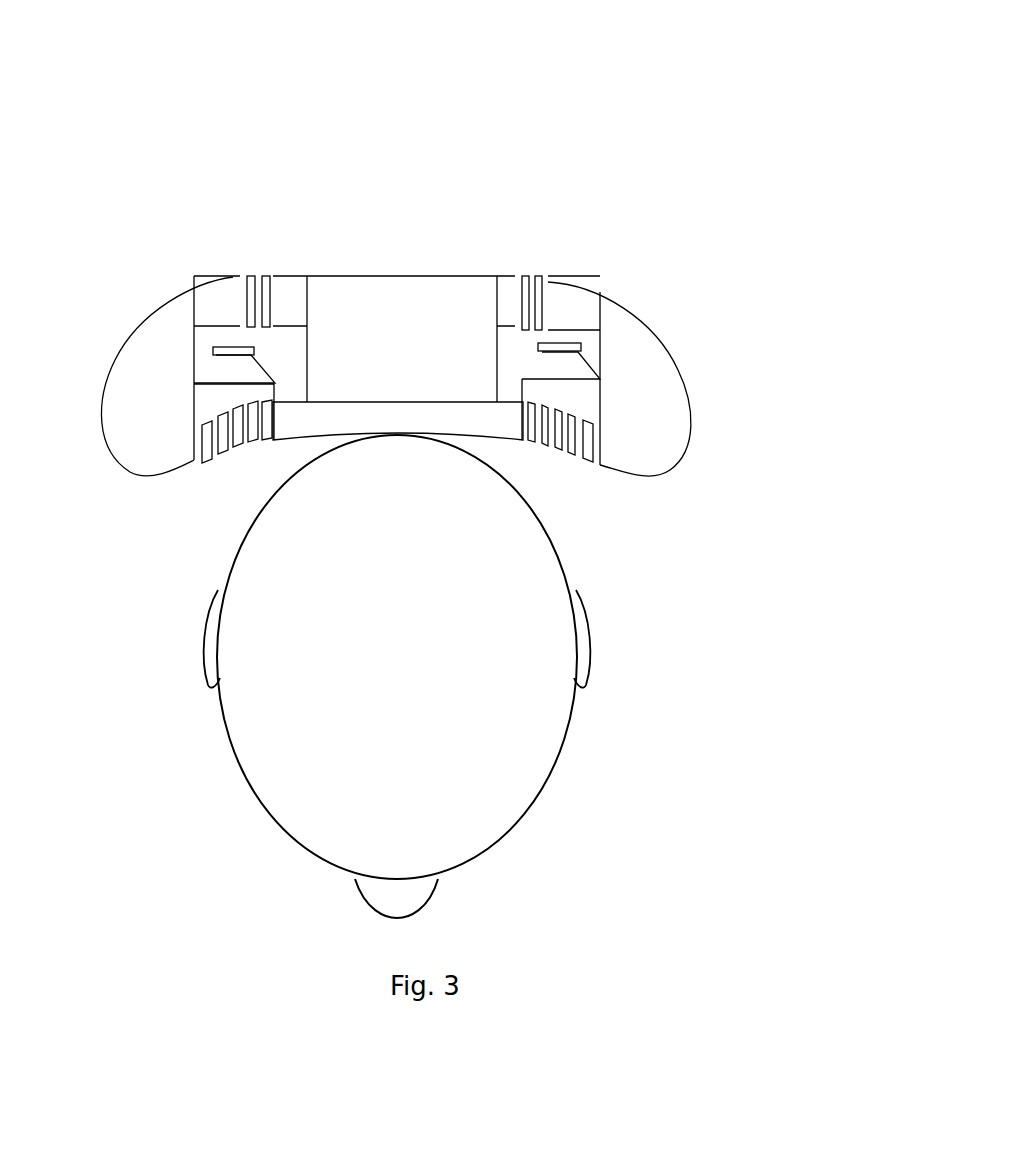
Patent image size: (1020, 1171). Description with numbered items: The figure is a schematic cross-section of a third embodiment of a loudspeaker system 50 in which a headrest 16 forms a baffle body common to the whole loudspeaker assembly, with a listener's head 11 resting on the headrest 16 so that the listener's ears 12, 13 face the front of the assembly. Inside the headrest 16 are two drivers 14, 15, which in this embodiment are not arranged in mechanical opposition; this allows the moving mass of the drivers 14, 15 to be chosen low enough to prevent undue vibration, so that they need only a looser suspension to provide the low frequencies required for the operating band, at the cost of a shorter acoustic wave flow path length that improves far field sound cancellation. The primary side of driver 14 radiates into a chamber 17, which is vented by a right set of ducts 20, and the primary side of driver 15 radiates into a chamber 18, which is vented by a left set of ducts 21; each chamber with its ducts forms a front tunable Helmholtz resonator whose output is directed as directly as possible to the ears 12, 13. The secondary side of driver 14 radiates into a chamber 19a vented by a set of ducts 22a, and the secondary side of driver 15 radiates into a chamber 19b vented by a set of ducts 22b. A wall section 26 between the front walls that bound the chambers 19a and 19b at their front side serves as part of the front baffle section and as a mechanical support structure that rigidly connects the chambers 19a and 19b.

The headphone device 50 is at (600, 117).
The listener's head 11 is at (432, 710).
The listener's ear 12 is at (207, 613).
The listener's ear 13 is at (588, 613).
The driver 14 is at (235, 348).
The driver 15 is at (563, 347).
The headrest 16 is at (693, 400).
The chamber 17 is at (215, 400).
The chamber 18 is at (578, 402).
The chamber 19a is at (285, 343).
The chamber 19b is at (508, 347).
The set of ducts 20 is at (230, 453).
The set of ducts 21 is at (537, 443).
The set of ducts 22a is at (251, 280).
The set of ducts 22b is at (526, 280).
The wall section 26 is at (442, 400).